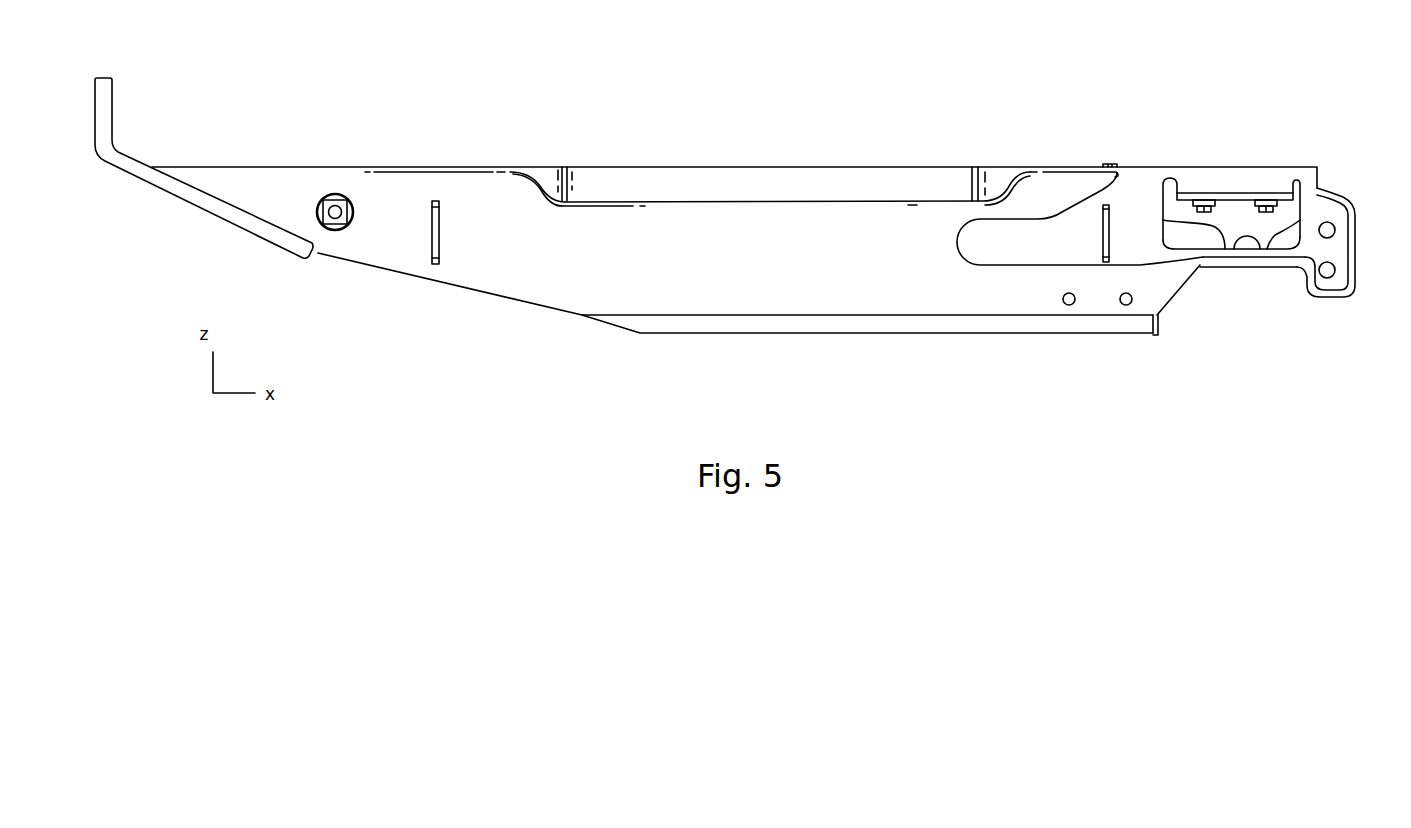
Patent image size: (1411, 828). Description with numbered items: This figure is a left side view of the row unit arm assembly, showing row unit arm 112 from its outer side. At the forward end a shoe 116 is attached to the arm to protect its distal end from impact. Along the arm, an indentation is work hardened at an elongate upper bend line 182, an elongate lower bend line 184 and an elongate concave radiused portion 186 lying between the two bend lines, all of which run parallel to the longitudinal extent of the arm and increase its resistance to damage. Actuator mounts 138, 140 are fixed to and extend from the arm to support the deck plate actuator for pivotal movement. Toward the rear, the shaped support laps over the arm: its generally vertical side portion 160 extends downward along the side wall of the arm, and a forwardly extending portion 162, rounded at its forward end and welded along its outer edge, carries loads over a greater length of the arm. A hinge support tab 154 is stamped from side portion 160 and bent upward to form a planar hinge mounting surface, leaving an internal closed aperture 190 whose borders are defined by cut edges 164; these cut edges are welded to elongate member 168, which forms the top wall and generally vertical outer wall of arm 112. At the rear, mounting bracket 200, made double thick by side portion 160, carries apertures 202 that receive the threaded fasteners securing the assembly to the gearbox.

The row unit arm 112 is at (498, 216).
The shoe 116 is at (165, 187).
The actuator mount 138 is at (440, 216).
The actuator mount 140 is at (1110, 217).
The hinge support tab 154 is at (1232, 197).
The side portion 160 is at (1140, 233).
The forwardly extending portion 162 is at (988, 247).
The cut edge 164 is at (1225, 249).
The elongate member 168 is at (547, 248).
The upper bend line 182 is at (770, 170).
The lower bend line 184 is at (760, 194).
The concave radiused portion 186 is at (688, 185).
The internal closed aperture 190 is at (1200, 243).
The mounting bracket 200 is at (1338, 187).
The aperture 202 is at (1335, 231).